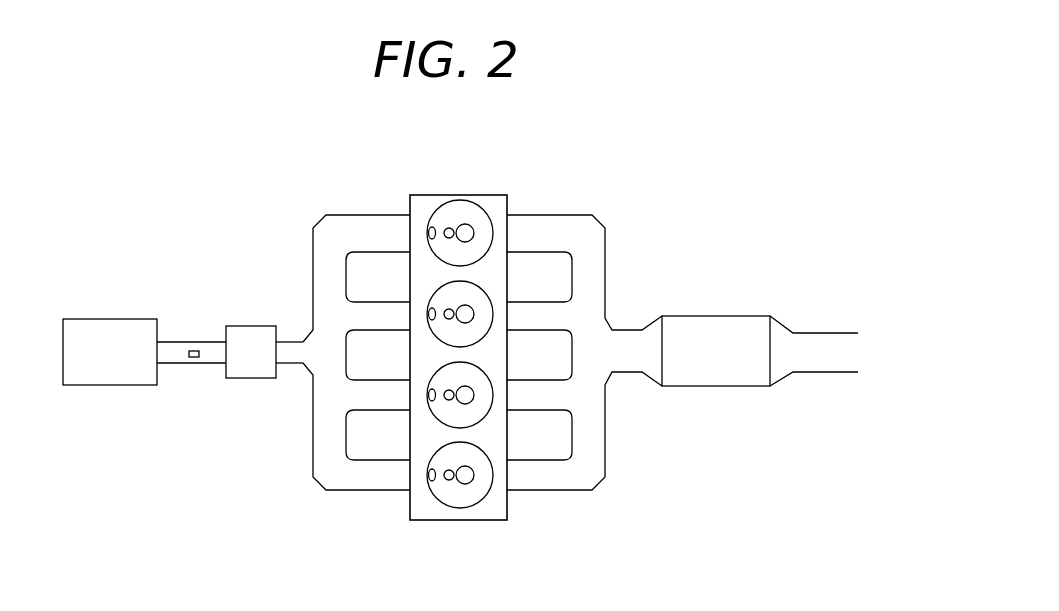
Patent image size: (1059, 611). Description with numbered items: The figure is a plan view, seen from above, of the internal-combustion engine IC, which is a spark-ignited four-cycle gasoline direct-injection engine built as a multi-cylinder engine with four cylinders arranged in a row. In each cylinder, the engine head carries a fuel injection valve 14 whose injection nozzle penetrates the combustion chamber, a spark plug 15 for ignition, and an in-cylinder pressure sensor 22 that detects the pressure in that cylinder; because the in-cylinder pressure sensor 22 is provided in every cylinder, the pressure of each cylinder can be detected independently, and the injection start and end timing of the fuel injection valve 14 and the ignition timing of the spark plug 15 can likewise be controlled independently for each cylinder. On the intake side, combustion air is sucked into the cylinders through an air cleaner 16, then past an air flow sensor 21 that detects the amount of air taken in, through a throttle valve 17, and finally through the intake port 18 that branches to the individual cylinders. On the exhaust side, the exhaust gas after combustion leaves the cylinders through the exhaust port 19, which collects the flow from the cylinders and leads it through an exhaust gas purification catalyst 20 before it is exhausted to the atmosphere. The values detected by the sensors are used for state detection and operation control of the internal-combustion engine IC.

The internal-combustion engine IC is at (616, 208).
The fuel injection valve 14 is at (475, 228).
The spark plug 15 is at (450, 228).
The in-cylinder pressure sensor 22 is at (435, 228).
The air cleaner 16 is at (107, 318).
The throttle valve 17 is at (264, 325).
The air flow sensor 21 is at (195, 349).
The intake port 18 is at (382, 478).
The exhaust port 19 is at (548, 478).
The exhaust gas purification catalyst 20 is at (725, 315).